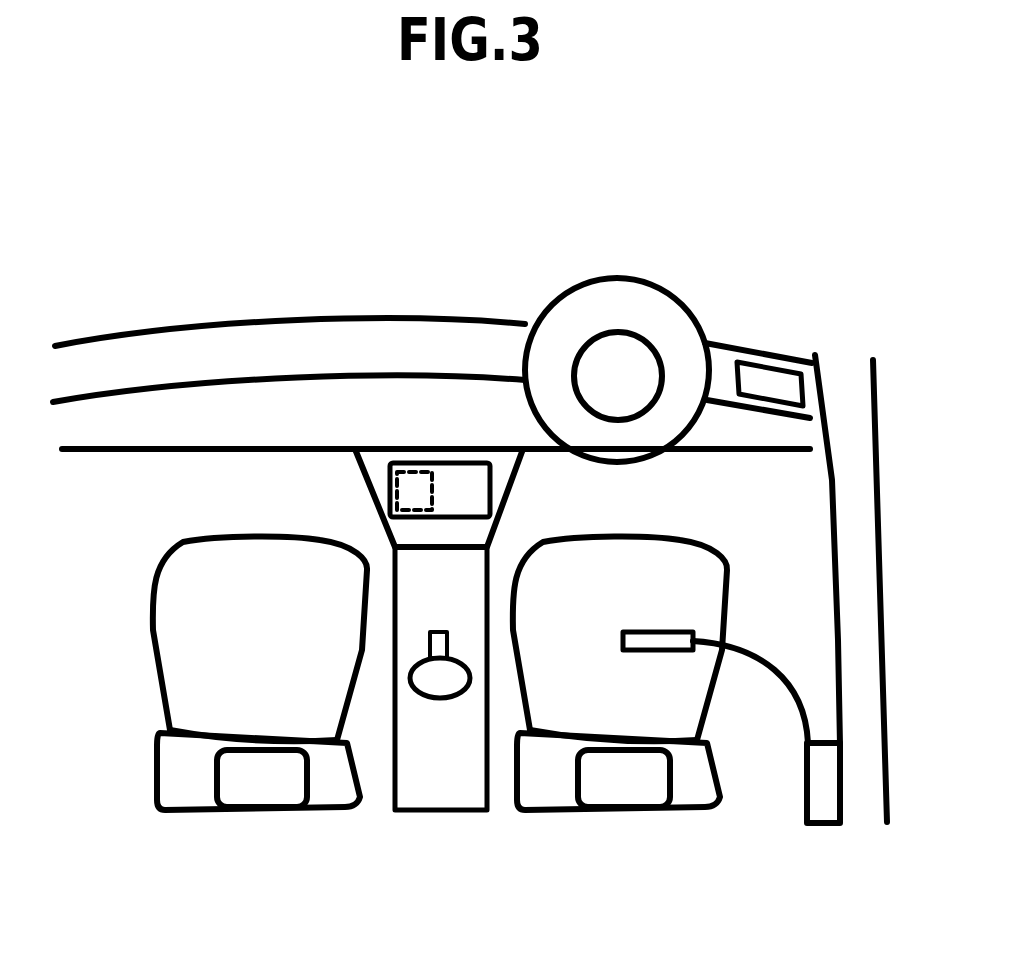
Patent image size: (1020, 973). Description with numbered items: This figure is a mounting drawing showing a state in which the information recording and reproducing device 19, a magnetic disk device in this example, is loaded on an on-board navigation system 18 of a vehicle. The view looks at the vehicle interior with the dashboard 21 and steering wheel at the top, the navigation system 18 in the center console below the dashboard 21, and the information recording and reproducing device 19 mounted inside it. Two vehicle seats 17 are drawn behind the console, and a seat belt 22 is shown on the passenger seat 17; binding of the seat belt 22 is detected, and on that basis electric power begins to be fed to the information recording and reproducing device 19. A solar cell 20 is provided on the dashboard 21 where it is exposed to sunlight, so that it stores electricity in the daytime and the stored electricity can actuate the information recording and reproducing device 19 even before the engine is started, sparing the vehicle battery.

The vehicle seat 17 is at (260, 785).
The on-board navigation system 18 is at (462, 478).
The information recording and reproducing device 19 is at (412, 470).
The solar cell 20 is at (762, 387).
The dashboard 21 is at (198, 362).
The seat belt 22 is at (747, 660).